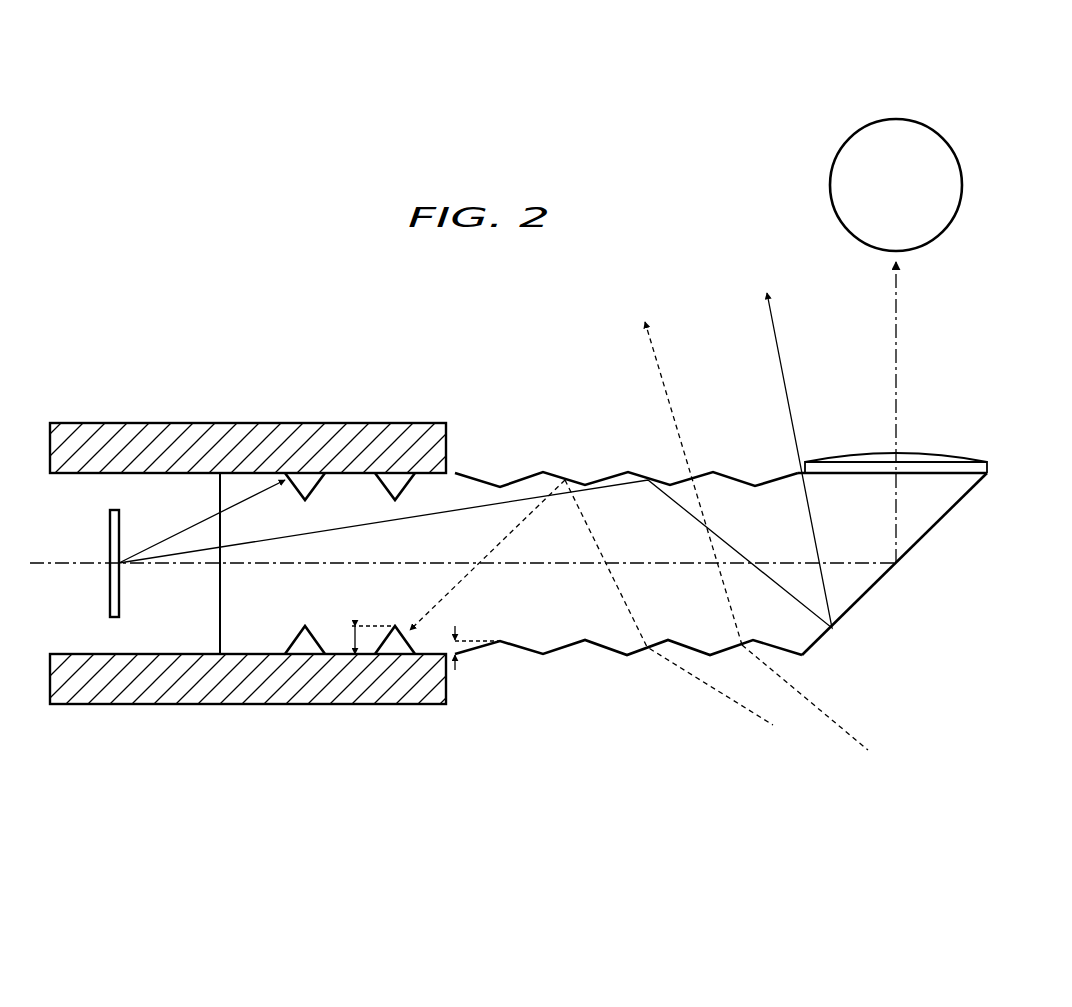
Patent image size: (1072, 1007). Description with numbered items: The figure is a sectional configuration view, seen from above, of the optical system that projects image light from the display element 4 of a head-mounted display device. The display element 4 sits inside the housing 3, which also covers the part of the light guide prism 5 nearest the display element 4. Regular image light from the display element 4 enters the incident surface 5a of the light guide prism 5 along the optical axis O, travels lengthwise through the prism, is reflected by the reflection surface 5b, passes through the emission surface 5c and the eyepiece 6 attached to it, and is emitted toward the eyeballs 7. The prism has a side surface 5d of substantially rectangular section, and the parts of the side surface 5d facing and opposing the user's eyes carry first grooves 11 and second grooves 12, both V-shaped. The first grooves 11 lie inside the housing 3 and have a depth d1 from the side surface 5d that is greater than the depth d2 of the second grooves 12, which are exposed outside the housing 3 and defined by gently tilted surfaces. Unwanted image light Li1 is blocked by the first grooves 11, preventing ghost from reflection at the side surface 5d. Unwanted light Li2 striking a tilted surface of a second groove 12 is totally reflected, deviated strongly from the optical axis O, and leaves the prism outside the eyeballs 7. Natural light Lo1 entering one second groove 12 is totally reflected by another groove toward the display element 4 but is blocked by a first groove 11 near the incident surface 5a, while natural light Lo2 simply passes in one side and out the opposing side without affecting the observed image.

The housing 3 is at (122, 440).
The display element 4 is at (108, 530).
The light guide prism 5 is at (580, 552).
The incident surface 5a is at (220, 590).
The reflection surface 5b is at (940, 520).
The emission surface 5c is at (948, 470).
The side surface 5d is at (625, 432).
The eyepiece 6 is at (917, 458).
The eyeballs 7 is at (962, 185).
The first grooves 11 is at (305, 643).
The second grooves 12 is at (668, 468).
The optical axis O is at (450, 420).
The unwanted light Li1 is at (188, 530).
The unwanted light Li2 is at (400, 521).
The natural light Lo1 is at (727, 698).
The natural light path Lo2 is at (828, 718).
The depth of the first grooves d1 is at (355, 640).
The depth of the second grooves d2 is at (457, 640).